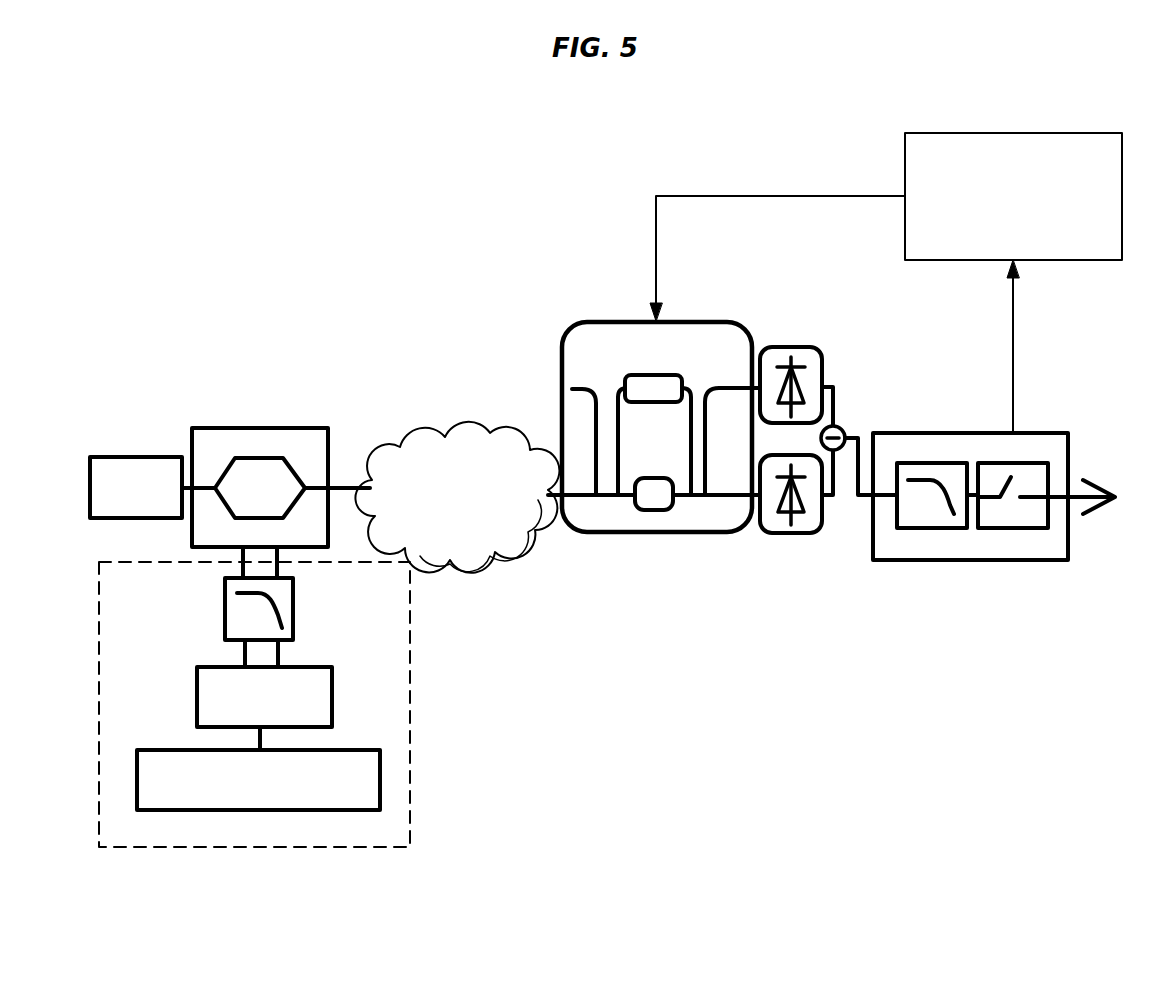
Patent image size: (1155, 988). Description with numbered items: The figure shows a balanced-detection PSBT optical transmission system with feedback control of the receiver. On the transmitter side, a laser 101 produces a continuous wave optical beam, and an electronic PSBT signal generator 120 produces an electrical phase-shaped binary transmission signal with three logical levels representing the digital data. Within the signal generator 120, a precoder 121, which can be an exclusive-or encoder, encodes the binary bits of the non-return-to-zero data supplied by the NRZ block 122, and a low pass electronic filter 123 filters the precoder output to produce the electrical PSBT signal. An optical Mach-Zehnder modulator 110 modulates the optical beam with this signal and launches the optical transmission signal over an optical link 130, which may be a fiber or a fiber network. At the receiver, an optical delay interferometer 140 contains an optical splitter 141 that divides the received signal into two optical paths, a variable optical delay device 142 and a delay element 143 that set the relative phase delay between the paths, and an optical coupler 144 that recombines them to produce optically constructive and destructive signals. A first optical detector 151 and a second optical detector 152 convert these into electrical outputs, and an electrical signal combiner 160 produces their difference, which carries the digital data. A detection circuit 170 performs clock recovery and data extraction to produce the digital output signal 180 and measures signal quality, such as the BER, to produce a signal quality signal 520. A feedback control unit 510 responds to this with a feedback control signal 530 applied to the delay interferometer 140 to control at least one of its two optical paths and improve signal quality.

The laser 101 is at (153, 452).
The optical Mach-Zehnder modulator 110 is at (332, 442).
The electronic PSBT signal generator 120 is at (410, 754).
The precoder 121 is at (177, 750).
The NRZ signal source 122 is at (332, 698).
The low pass electronic filter 123 is at (293, 610).
The optical link 130 is at (458, 497).
The optical delay interferometer 140 is at (628, 533).
The optical splitter 141 is at (588, 533).
The variable optical delay device 142 is at (671, 514).
The variable optical delay device 143 is at (687, 387).
The optical coupler 144 is at (707, 520).
The first optical detector 151 is at (805, 355).
The second optical detector 152 is at (790, 533).
The electrical signal combiner 160 is at (842, 427).
The detection circuit 170 is at (973, 560).
The digital output signal 180 is at (1100, 480).
The feedback control unit 510 is at (1013, 196).
The signal quality signal 520 is at (1017, 403).
The feedback control signal 530 is at (655, 244).